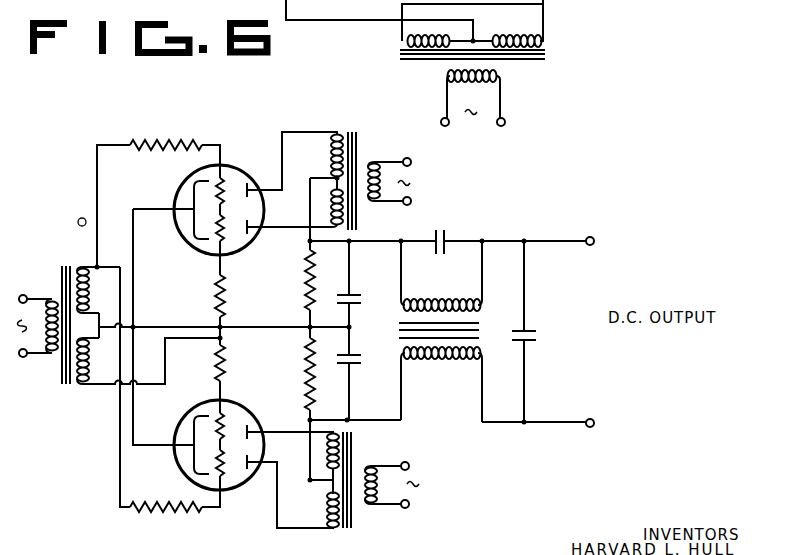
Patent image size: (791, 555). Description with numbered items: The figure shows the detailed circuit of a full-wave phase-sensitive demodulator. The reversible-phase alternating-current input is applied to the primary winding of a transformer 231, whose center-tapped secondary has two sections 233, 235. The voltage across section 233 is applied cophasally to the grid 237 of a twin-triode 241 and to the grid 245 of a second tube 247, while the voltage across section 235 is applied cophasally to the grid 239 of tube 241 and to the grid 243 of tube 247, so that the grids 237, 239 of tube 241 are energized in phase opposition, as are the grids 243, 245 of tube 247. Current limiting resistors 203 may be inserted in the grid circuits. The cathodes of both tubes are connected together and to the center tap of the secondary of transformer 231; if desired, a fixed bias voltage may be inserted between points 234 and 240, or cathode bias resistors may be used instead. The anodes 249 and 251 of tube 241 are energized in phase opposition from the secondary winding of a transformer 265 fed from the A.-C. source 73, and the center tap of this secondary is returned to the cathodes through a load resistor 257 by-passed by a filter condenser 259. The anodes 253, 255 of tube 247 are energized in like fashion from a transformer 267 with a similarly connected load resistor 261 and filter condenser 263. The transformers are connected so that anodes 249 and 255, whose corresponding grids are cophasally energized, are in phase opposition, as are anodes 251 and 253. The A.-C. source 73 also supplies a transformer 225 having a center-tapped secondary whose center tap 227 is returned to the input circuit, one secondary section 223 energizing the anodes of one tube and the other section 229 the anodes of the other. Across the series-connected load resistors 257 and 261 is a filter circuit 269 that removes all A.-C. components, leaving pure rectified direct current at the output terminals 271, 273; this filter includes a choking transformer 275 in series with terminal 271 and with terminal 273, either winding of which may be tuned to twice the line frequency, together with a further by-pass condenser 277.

The A.-C. source 73 is at (449, 125).
The current limiting resistor 203 is at (163, 140).
The secondary section 223 is at (401, 40).
The transformer 225 is at (546, 60).
The center tap 227 is at (476, 38).
The secondary section 229 is at (545, 33).
The transformer 231 is at (58, 381).
The secondary winding section 233 is at (80, 266).
The point 234 is at (105, 321).
The secondary winding section 235 is at (86, 388).
The grid 237 is at (225, 178).
The grid 239 is at (227, 233).
The point 240 is at (136, 327).
The twin-triode 241 is at (177, 185).
The grid 243 is at (218, 427).
The grid 245 is at (218, 470).
The tube 247 is at (175, 458).
The anode 249 is at (252, 187).
The anode 251 is at (252, 223).
The anode 253 is at (252, 426).
The anode 255 is at (253, 458).
The load resistor 257 is at (312, 263).
The filter condenser 259 is at (372, 291).
The load resistor 261 is at (315, 380).
The filter condenser 263 is at (372, 350).
The transformer 265 is at (358, 152).
The transformer 267 is at (345, 528).
The filter circuit 269 is at (462, 390).
The output terminal 271 is at (595, 241).
The output terminal 273 is at (596, 421).
The choking transformer 275 is at (479, 327).
The by-pass condenser 277 is at (537, 338).